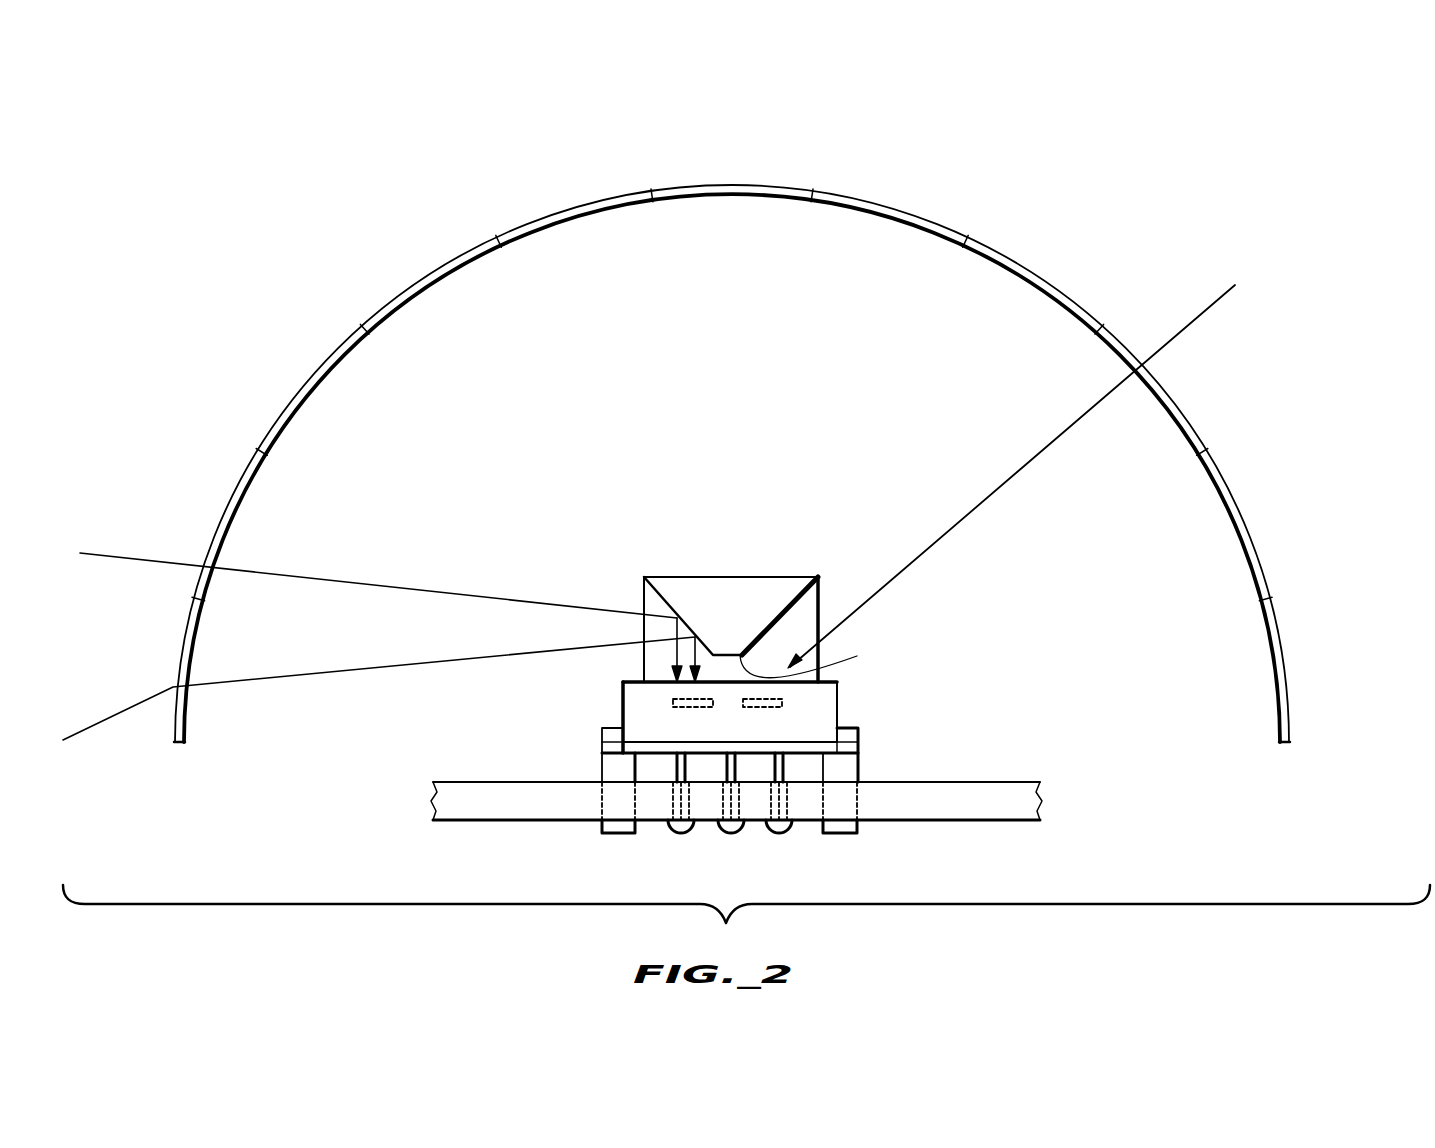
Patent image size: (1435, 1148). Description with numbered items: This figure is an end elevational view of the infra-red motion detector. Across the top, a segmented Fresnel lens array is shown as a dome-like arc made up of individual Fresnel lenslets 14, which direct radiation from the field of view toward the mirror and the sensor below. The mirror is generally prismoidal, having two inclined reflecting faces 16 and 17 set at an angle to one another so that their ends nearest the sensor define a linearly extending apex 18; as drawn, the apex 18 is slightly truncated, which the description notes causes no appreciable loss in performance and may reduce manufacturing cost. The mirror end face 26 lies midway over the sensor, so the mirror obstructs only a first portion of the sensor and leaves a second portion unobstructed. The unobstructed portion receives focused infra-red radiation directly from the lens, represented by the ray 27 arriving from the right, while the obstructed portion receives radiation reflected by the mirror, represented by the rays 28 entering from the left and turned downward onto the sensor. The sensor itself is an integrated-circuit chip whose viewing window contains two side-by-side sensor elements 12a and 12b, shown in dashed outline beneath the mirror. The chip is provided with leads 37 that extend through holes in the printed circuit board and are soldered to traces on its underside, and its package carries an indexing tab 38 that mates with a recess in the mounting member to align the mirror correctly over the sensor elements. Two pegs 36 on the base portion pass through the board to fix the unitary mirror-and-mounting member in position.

The sensor element 12a is at (673, 704).
The sensor element 12b is at (780, 708).
The Fresnel lenslets 14 is at (680, 189).
The inclined reflecting face 16 is at (675, 608).
The inclined reflecting face 17 is at (797, 605).
The apex 18 is at (816, 660).
The mirror end face 26 is at (735, 590).
The ray 27 is at (930, 546).
The rays 28 is at (326, 578).
The pegs 36 is at (620, 835).
The leads 37 is at (688, 800).
The indexing tab 38 is at (602, 745).